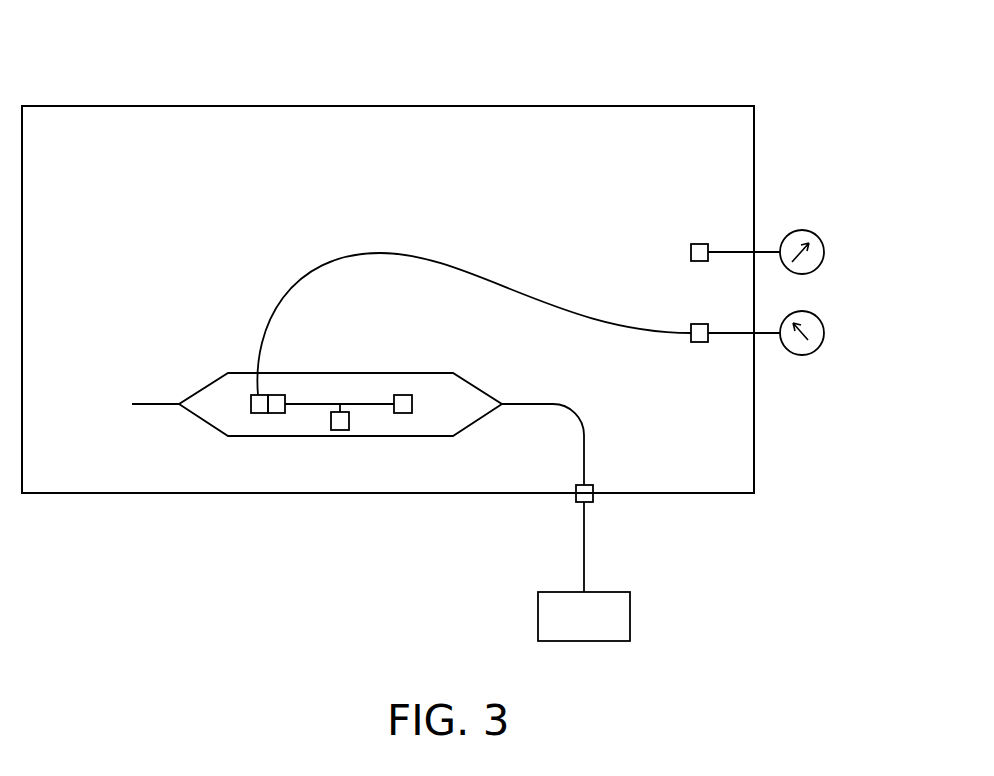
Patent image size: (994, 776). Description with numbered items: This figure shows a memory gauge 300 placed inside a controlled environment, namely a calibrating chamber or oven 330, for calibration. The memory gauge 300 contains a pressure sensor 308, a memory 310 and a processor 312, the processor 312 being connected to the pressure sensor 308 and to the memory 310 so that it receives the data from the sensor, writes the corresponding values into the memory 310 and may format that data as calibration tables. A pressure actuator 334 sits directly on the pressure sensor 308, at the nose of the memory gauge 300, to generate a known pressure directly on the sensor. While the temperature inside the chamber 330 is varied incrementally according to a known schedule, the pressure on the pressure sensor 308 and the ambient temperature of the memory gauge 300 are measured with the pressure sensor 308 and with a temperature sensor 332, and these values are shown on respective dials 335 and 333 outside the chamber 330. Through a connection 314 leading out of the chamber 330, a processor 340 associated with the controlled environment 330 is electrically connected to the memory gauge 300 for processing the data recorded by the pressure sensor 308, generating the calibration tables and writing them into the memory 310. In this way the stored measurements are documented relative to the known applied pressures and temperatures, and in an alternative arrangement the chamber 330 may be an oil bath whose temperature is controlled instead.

The memory gauge 300 is at (422, 373).
The pressure sensor 308 is at (280, 413).
The memory 310 is at (405, 413).
The processor 312 is at (344, 431).
The connector port 314 is at (585, 437).
The calibrating chamber or oven 330 is at (700, 106).
The temperature sensor 332 is at (692, 243).
The dial 333 is at (824, 246).
The pressure actuator 334 is at (255, 396).
The dial 335 is at (824, 327).
The processor 340 is at (630, 601).